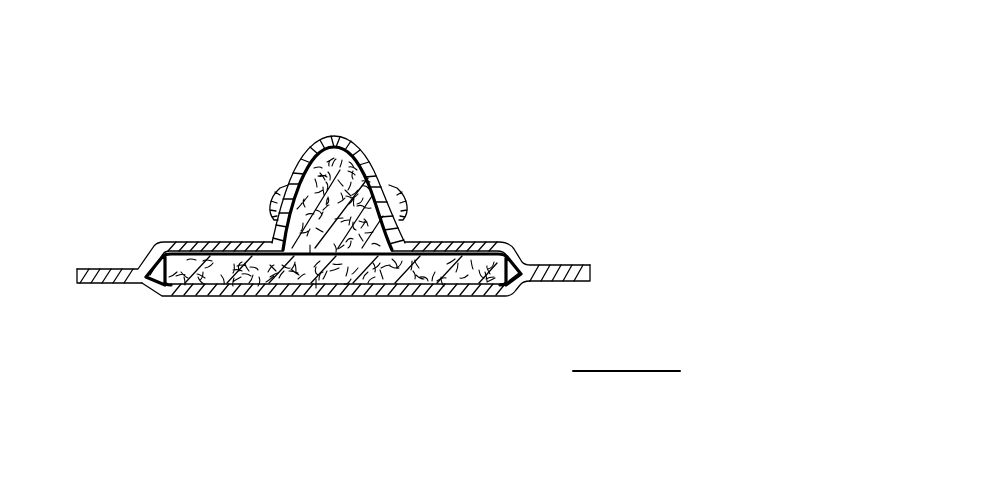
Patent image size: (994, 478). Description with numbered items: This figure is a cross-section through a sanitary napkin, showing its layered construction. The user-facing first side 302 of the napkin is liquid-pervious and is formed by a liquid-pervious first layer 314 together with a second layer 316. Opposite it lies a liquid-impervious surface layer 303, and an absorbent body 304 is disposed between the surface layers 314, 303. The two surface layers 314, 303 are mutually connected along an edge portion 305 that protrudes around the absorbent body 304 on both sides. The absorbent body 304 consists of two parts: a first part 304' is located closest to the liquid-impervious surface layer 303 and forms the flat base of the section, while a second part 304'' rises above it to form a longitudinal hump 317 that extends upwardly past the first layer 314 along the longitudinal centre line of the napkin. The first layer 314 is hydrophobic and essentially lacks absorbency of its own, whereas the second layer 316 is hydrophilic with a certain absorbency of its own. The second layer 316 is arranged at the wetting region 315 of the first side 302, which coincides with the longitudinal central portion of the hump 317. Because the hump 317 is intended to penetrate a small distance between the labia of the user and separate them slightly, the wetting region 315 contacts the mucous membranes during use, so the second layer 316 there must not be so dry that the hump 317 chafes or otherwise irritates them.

The user-facing first side 302 is at (527, 218).
The liquid-impervious surface layer 303 is at (477, 293).
The absorbent body 304 is at (360, 178).
The first part of the absorbent body 304' is at (333, 308).
The second part of the absorbent body 304'' is at (386, 163).
The edge portion 305 is at (107, 268).
The liquid-pervious first layer 314 is at (277, 207).
The wetting region 315 is at (305, 158).
The second layer 316 is at (317, 161).
The longitudinal hump 317 is at (353, 142).